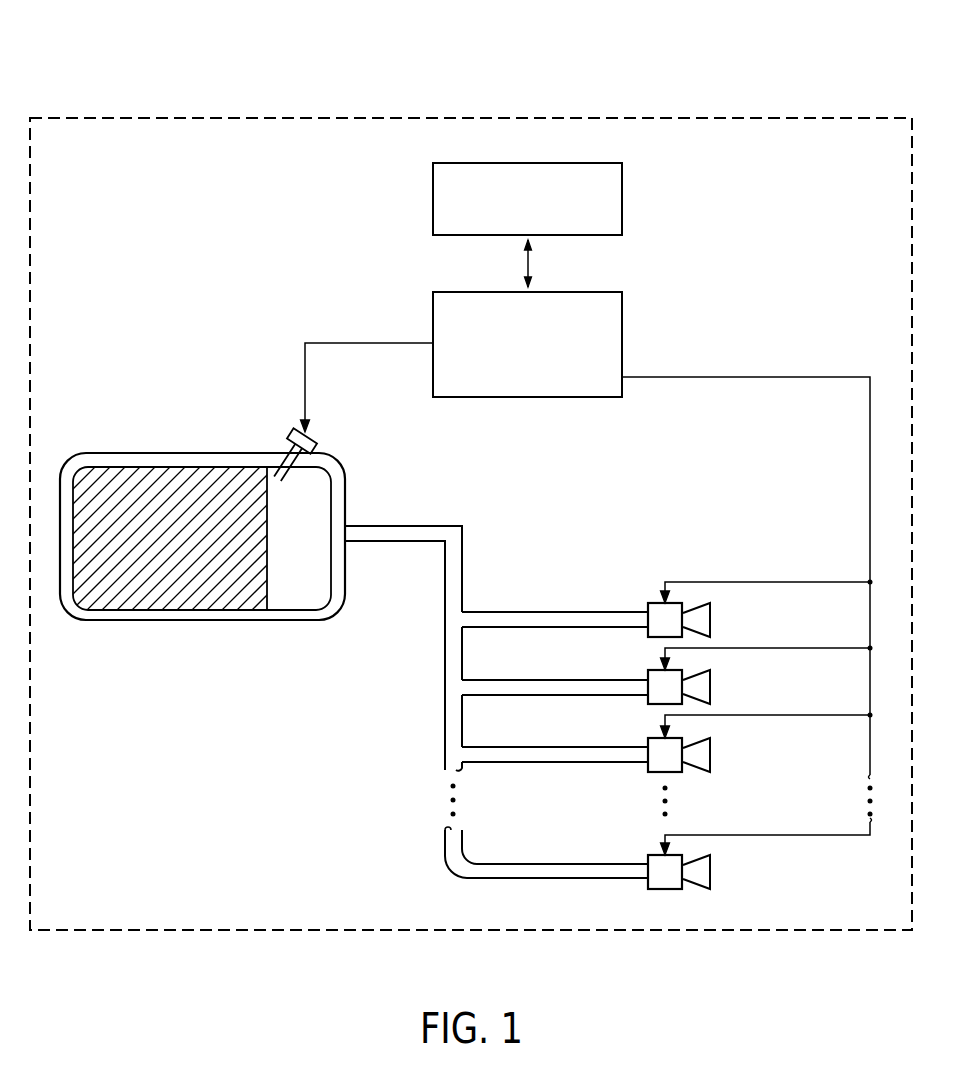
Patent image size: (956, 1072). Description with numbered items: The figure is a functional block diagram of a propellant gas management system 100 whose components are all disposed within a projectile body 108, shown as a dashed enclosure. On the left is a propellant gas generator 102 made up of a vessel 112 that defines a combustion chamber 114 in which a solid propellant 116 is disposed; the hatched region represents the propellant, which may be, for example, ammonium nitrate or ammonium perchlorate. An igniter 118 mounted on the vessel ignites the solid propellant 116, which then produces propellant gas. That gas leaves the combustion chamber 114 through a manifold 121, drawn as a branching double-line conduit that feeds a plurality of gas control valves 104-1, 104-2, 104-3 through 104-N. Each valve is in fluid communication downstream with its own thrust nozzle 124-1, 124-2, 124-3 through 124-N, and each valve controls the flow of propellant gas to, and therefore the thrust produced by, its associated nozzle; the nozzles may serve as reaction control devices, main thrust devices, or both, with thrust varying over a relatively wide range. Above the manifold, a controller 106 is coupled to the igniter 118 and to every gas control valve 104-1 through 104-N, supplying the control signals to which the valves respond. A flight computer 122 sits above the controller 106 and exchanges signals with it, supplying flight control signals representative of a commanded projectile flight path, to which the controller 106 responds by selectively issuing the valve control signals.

The propellant gas management system 100 is at (192, 315).
The propellant gas generator 102 is at (206, 516).
The gas control valve 104-1 is at (648, 606).
The gas control valve 104-2 is at (648, 673).
The gas control valve 104-3 is at (648, 740).
The gas control valve 104-N is at (648, 858).
The controller 106 is at (622, 326).
The projectile body 108 is at (787, 118).
The vessel 112 is at (140, 621).
The combustion chamber 114 is at (296, 612).
The propellant 116 is at (185, 551).
The igniter 118 is at (290, 433).
The manifold 121 is at (445, 590).
The flight computer 122 is at (622, 194).
The thrust nozzle 124-1 is at (712, 622).
The thrust nozzle 124-2 is at (712, 689).
The thrust nozzle 124-3 is at (712, 756).
The thrust nozzle 124-N is at (712, 875).